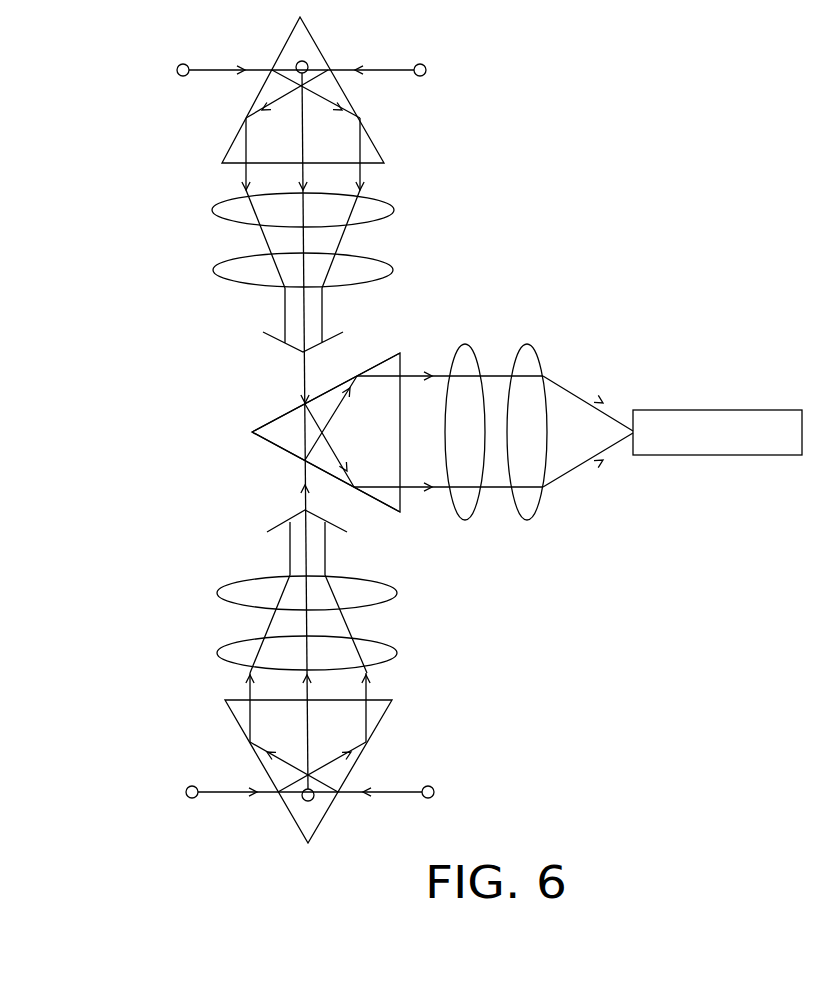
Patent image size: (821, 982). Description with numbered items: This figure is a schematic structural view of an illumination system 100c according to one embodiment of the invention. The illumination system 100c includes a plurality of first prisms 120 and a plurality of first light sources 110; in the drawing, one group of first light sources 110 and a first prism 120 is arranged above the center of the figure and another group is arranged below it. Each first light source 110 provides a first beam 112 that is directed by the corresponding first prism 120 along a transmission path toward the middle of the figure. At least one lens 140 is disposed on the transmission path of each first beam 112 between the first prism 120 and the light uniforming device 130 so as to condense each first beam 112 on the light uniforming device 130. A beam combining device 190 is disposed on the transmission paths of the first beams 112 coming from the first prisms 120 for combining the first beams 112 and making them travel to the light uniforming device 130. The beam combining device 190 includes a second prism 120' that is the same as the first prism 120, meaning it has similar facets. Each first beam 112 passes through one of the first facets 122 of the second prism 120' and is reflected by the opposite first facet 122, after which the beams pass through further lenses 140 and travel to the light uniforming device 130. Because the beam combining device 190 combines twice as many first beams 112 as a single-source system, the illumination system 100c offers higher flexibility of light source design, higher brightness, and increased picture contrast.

The illumination system 100c is at (787, 836).
The first light source 110 is at (426, 70).
The first beam 112 is at (285, 315).
The first prism 120 is at (363, 431).
The second prism 120' is at (291, 432).
The first facet 122 is at (269, 413).
The light uniforming device 130 is at (707, 440).
The lens 140 is at (365, 262).
The beam combining device 190 is at (220, 431).